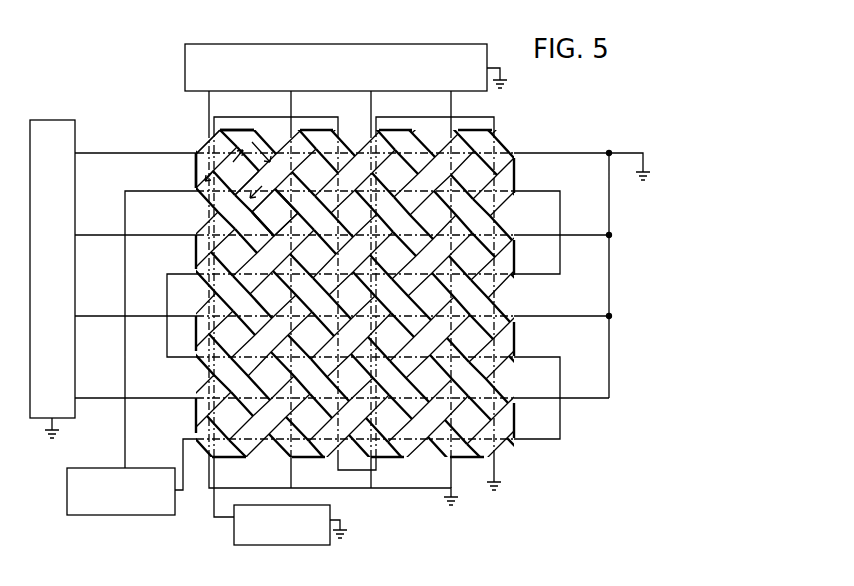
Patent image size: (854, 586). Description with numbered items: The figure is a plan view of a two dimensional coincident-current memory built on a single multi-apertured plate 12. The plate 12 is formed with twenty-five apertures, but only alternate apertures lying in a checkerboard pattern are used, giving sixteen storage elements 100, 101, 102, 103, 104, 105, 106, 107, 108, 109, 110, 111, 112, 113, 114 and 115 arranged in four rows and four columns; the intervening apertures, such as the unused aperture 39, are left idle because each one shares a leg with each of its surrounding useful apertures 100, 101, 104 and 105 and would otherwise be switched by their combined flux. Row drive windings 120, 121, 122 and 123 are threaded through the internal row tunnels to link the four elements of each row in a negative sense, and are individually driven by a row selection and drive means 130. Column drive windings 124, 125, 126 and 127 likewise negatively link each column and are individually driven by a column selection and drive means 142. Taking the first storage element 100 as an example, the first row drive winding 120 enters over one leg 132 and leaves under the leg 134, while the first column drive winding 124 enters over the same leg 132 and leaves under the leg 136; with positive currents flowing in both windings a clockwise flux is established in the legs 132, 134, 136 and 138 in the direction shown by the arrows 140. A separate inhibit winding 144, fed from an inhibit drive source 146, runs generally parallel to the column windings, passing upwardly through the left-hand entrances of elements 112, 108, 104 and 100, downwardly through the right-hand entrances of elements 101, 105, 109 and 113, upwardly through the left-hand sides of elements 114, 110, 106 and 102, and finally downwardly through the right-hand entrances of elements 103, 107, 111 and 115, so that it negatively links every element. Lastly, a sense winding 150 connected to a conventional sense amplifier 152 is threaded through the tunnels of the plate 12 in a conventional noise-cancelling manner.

The plate 12 is at (517, 152).
The unused aperture 39 is at (266, 219).
The storage element 100 is at (225, 179).
The storage element 101 is at (303, 180).
The storage element 102 is at (383, 181).
The storage element 103 is at (462, 182).
The storage element 104 is at (222, 261).
The storage element 105 is at (301, 262).
The storage element 106 is at (381, 263).
The storage element 107 is at (460, 265).
The storage element 108 is at (220, 342).
The storage element 109 is at (299, 344).
The storage element 110 is at (379, 345).
The storage element 111 is at (458, 346).
The storage element 112 is at (218, 424).
The storage element 113 is at (297, 425).
The storage element 114 is at (377, 427).
The storage element 115 is at (456, 428).
The row drive winding 120 is at (89, 154).
The row drive winding 121 is at (89, 237).
The row drive winding 122 is at (85, 316).
The row drive winding 123 is at (85, 398).
The column drive winding 124 is at (208, 108).
The column drive winding 125 is at (292, 116).
The column drive winding 126 is at (372, 116).
The column drive winding 127 is at (452, 116).
The row selection and drive means 130 is at (60, 120).
The leg 132 is at (210, 146).
The leg 134 is at (240, 137).
The leg 136 is at (197, 167).
The leg 138 is at (246, 205).
The arrows 140 is at (213, 148).
The column selection and drive means 142 is at (185, 72).
The inhibit winding 144 is at (216, 519).
The inhibit drive source 146 is at (233, 541).
The sense winding 150 is at (183, 461).
The sense amplifier 152 is at (125, 466).